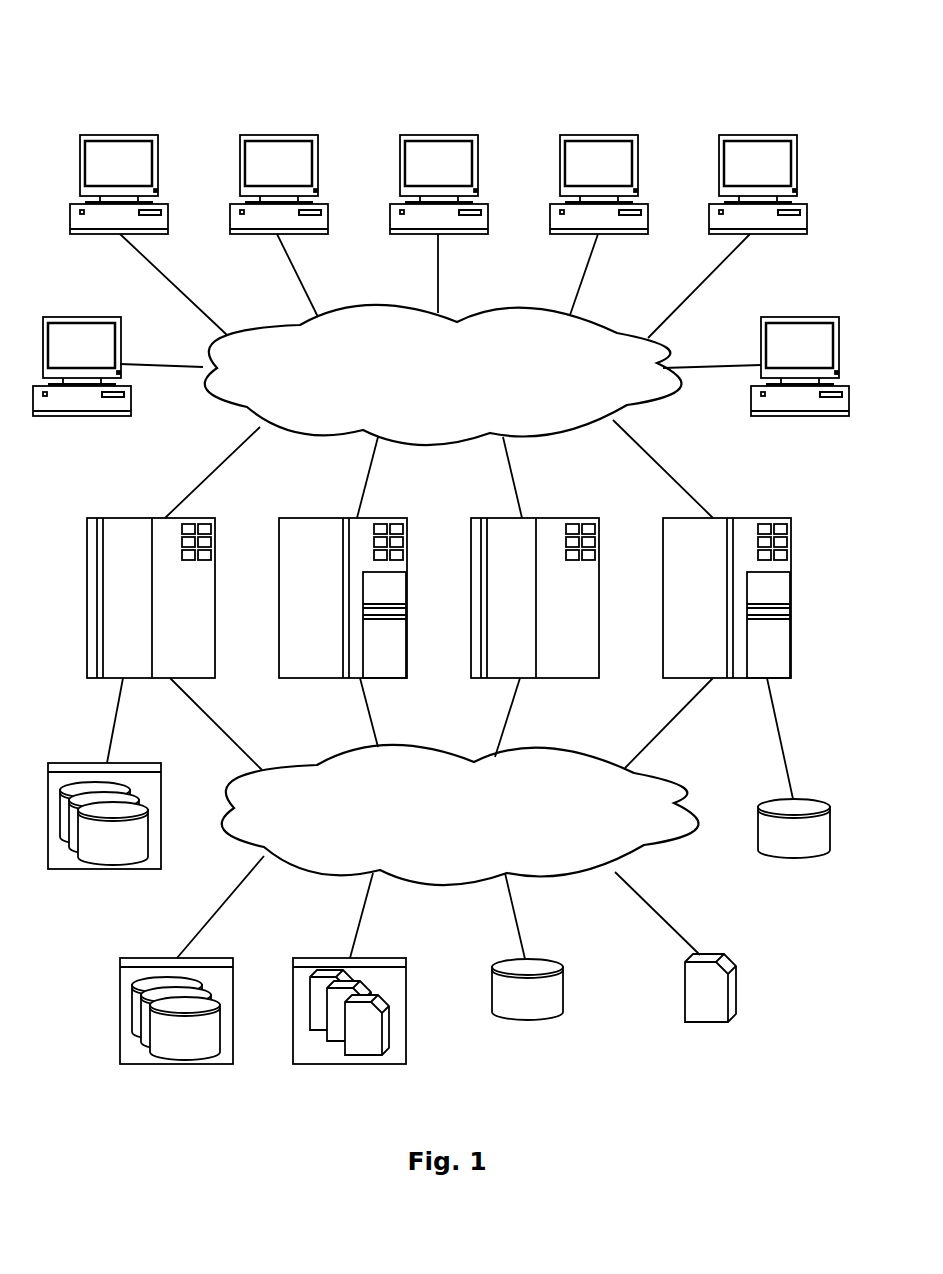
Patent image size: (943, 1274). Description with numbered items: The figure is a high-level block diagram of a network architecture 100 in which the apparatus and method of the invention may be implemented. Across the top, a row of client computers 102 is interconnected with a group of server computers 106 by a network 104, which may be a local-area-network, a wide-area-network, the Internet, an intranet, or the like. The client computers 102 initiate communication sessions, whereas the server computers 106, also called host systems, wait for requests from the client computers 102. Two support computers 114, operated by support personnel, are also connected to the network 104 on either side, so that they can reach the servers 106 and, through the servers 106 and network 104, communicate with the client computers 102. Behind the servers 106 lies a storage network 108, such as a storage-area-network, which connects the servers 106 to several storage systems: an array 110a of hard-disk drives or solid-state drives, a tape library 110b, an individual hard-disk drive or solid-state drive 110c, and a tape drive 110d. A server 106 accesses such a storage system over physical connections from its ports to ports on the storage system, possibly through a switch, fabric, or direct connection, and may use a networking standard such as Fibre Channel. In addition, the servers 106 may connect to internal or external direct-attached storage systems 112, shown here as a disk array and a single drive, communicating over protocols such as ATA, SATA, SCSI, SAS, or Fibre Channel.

The network architecture 100 is at (186, 72).
The client computer 102 is at (438, 184).
The network 104 is at (566, 386).
The server computer 106 is at (439, 598).
The storage network 108 is at (549, 826).
The array of hard-disk drives or solid-state drives 110a is at (177, 1063).
The tape library 110b is at (350, 1063).
The individual hard-disk drive or solid-state drive 110c is at (524, 1012).
The tape drive 110d is at (707, 1022).
The direct-attached storage system 112 is at (107, 869).
The support computer 114 is at (441, 366).